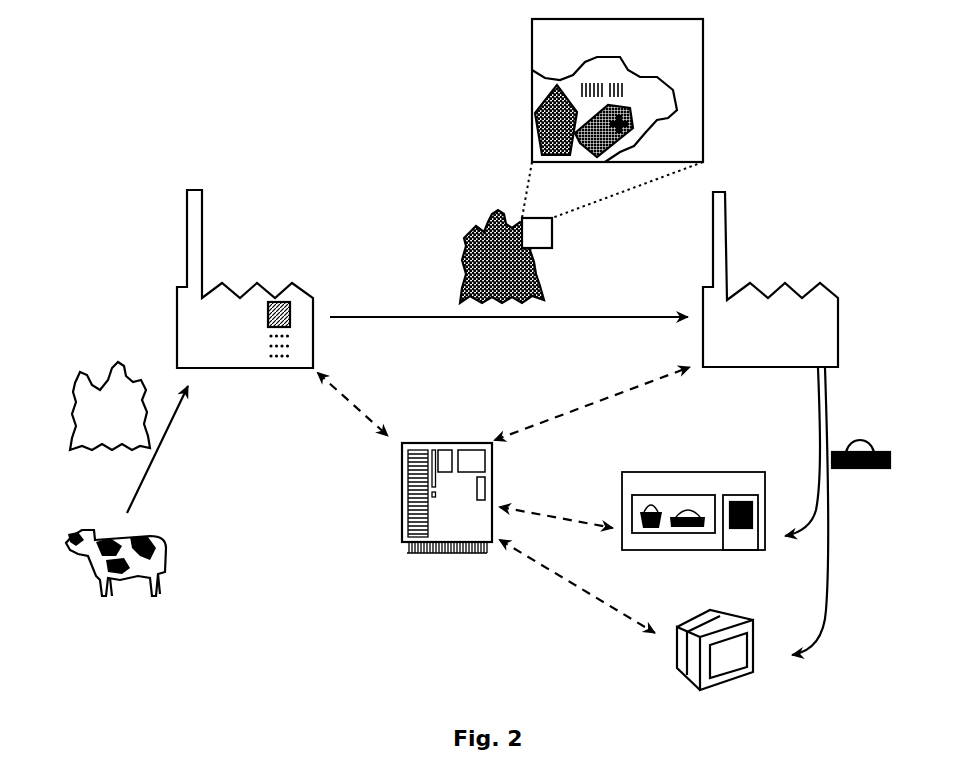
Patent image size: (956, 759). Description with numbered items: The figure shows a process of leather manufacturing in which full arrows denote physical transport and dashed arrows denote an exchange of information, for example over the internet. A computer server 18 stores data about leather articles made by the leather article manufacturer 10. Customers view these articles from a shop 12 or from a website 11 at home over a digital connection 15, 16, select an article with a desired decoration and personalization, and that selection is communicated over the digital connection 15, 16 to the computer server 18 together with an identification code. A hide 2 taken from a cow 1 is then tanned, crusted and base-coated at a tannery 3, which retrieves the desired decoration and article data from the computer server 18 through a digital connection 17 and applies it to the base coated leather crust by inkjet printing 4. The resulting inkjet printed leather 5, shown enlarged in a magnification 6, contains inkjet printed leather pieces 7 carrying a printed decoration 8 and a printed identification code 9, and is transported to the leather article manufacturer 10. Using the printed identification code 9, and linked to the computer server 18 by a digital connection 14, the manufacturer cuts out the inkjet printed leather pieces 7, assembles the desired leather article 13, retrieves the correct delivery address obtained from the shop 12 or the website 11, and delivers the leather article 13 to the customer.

The cow 1 is at (116, 584).
The hide 2 is at (110, 397).
The tannery 3 is at (245, 274).
The inkjet printing 4 is at (277, 300).
The inkjet printed leather 5 is at (493, 275).
The magnification of part of inkjet printed leather 6 is at (703, 38).
The inkjet printed leather piece 7 is at (573, 118).
The printed decoration 8 is at (628, 128).
The printed identification code 9 is at (605, 85).
The leather article manufacturer 10 is at (770, 279).
The website 11 is at (683, 660).
The shop 12 is at (632, 483).
The leather article 13 is at (840, 470).
The digital connection 14 is at (592, 403).
The digital connection 15 is at (556, 504).
The digital connection 16 is at (577, 586).
The digital connection 17 is at (362, 404).
The computer server 18 is at (445, 520).